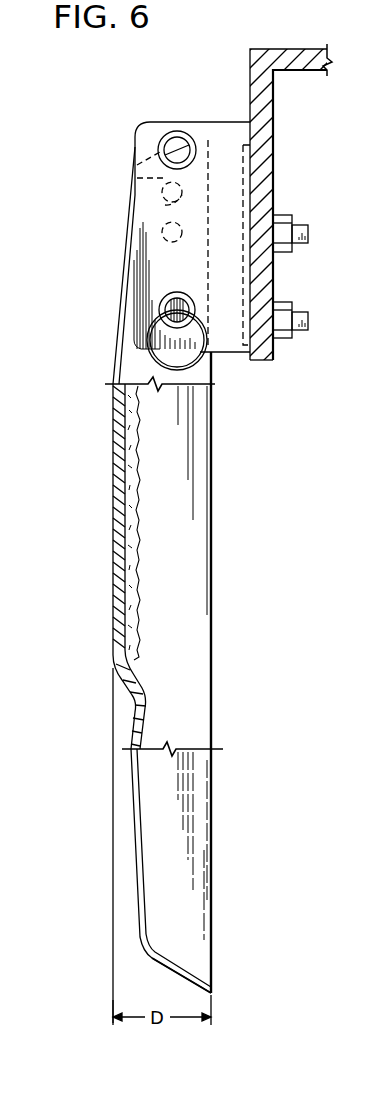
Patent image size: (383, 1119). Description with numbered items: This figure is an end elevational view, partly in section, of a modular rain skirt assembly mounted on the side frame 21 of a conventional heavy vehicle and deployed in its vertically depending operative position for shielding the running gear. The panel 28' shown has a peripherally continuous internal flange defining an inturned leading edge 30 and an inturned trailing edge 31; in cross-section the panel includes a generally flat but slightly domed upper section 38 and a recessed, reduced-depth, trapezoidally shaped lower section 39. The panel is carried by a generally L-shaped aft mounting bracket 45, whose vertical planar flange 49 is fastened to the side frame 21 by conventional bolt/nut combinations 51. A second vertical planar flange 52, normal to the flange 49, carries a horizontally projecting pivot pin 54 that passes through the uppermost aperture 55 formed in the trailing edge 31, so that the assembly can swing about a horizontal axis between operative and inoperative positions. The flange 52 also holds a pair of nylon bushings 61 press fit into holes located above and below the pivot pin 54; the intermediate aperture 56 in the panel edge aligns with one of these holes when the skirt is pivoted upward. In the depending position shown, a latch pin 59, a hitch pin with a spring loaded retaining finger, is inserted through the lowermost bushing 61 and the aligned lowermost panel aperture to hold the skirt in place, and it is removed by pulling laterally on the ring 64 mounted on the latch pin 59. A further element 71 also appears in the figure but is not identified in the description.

The side frame 21 is at (266, 196).
The panel 28' is at (206, 871).
The inturned leading edge 30 is at (185, 478).
The inturned trailing edge 31 is at (200, 935).
The upper section 38 is at (113, 445).
The lower section 39 is at (133, 860).
The aft mounting bracket 45 is at (124, 130).
The vertical planar flange 49 is at (258, 176).
The bolt/nut combinations 51 is at (314, 197).
The second vertical planar flange 52 is at (150, 248).
The pivot pin 54 is at (137, 178).
The aperture 55 is at (165, 205).
The intermediate aperture 56 is at (162, 233).
The latch pin 59 is at (172, 312).
The nylon bushings 61 is at (170, 133).
The ring 64 is at (150, 345).
The backing strip 71 is at (137, 447).